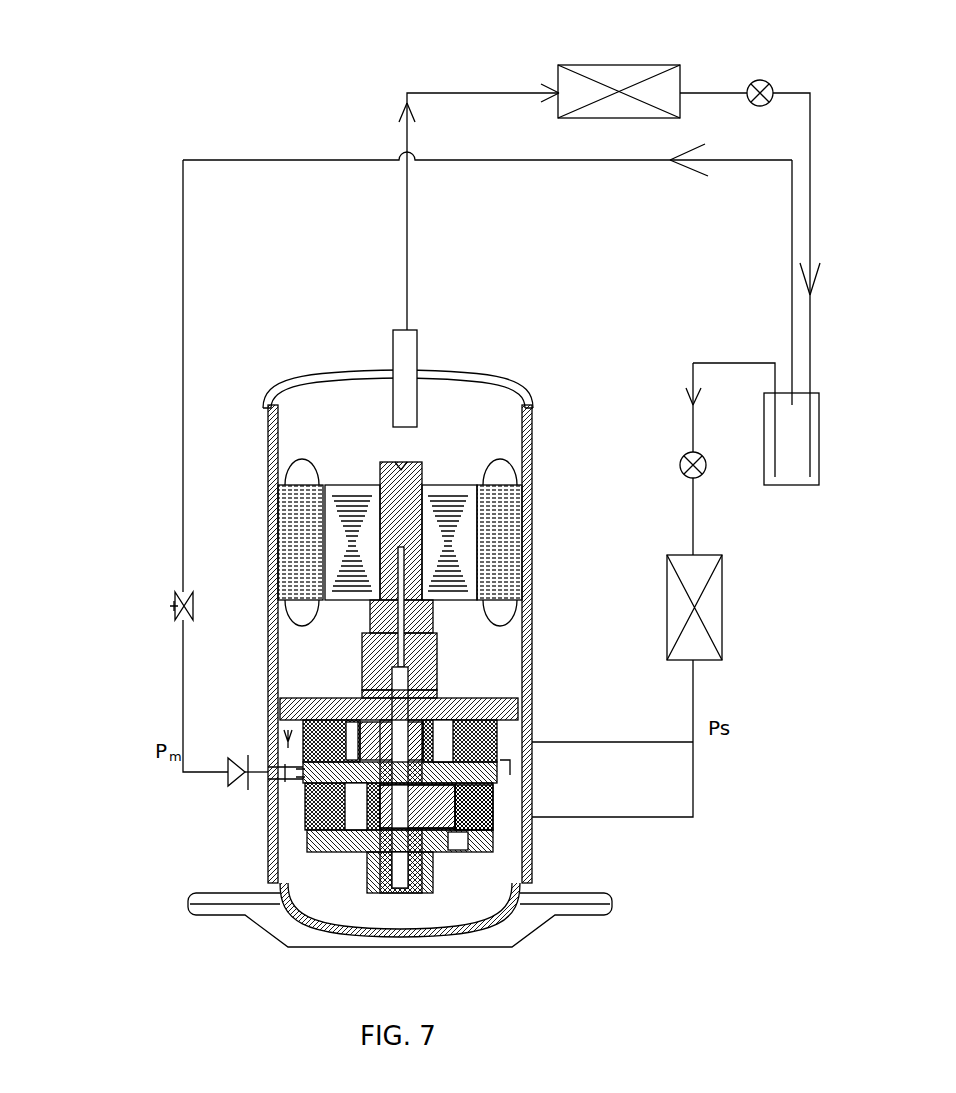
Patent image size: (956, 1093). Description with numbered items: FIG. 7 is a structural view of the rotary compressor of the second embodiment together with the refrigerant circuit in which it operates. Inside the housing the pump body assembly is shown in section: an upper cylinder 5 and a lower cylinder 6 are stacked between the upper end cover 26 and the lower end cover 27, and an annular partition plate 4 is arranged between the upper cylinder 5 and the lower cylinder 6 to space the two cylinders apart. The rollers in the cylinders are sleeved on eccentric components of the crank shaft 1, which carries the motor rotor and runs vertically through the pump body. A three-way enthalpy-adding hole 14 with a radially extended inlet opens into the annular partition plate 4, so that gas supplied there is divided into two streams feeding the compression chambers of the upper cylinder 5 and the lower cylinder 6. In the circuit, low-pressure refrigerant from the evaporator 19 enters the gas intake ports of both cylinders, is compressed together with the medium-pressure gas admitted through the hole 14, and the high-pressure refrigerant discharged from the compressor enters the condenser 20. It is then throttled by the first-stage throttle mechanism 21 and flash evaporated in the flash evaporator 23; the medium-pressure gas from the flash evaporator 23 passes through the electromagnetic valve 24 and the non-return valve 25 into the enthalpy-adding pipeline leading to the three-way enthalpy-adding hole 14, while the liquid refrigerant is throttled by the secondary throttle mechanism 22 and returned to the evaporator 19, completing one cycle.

The crankshaft 1 is at (430, 617).
The annular partition plate 4 is at (493, 793).
The upper cylinder 5 is at (497, 735).
The lower cylinder 6 is at (307, 813).
The three-way enthalpy-adding hole 14 is at (293, 783).
The evaporator 19 is at (722, 660).
The condenser 20 is at (623, 75).
The first-stage throttle mechanism 21 is at (707, 475).
The secondary throttle mechanism 22 is at (772, 88).
The flash evaporator 23 is at (800, 438).
The electromagnetic valve 24 is at (180, 595).
The non-return valve 25 is at (227, 775).
The upper end cover 26 is at (492, 697).
The lower end cover 27 is at (307, 843).